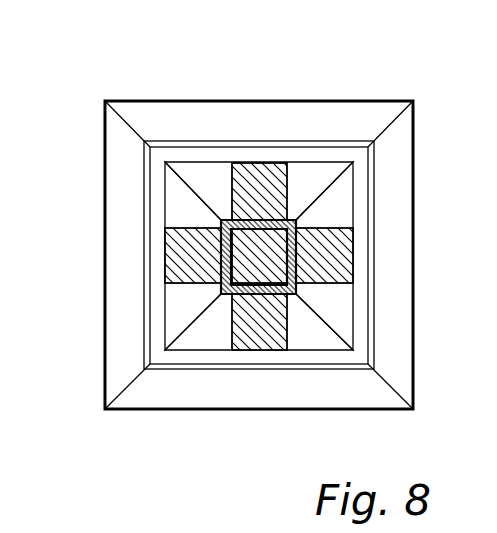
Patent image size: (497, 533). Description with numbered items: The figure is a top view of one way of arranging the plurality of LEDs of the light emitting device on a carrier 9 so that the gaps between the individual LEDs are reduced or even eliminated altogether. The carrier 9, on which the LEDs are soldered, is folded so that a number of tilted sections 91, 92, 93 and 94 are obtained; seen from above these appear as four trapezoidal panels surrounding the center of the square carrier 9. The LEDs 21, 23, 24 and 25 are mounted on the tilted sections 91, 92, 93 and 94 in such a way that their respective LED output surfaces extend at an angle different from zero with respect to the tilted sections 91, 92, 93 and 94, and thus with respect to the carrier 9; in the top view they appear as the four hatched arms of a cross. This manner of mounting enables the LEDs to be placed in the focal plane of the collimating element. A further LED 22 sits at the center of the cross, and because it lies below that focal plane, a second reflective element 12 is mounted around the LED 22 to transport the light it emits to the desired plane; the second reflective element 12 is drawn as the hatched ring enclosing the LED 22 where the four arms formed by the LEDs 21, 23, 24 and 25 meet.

The carrier 9 is at (133, 410).
The second reflective element 12 is at (297, 221).
The LED 21 is at (175, 252).
The LED 22 is at (253, 260).
The LED 23 is at (333, 258).
The LED 24 is at (262, 335).
The LED 25 is at (260, 173).
The tilted section 91 is at (175, 203).
The tilted section 92 is at (338, 312).
The tilted section 93 is at (205, 338).
The tilted section 94 is at (210, 177).